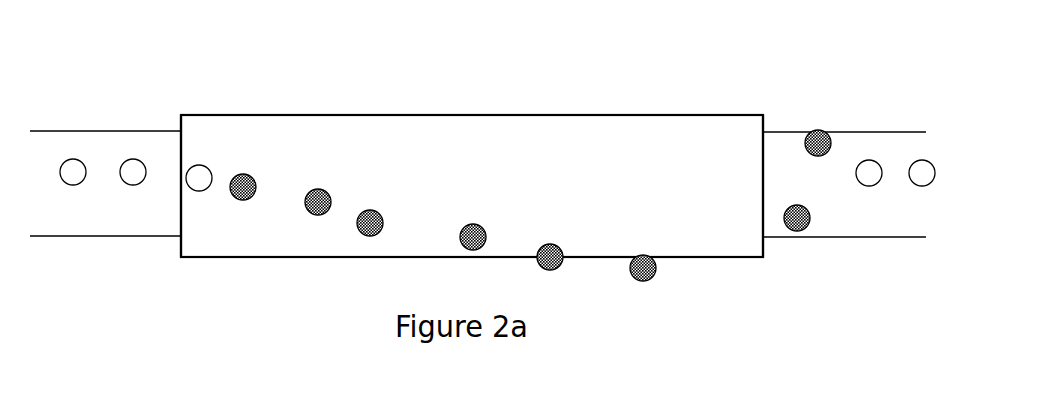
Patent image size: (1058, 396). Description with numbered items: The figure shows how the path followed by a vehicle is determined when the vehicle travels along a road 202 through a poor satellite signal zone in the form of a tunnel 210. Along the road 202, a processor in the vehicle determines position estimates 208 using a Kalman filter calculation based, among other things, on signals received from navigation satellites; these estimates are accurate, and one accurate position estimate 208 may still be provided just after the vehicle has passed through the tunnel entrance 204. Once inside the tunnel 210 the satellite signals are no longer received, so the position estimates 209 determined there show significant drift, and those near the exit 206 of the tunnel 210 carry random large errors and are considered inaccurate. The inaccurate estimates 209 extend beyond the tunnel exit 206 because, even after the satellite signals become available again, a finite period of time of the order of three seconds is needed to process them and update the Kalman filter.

The road 202 is at (93, 237).
The tunnel entrance 204 is at (181, 158).
The tunnel exit 206 is at (763, 148).
The position estimates 208 is at (138, 180).
The inaccurate position estimates 209 is at (255, 191).
The tunnel 210 is at (496, 155).